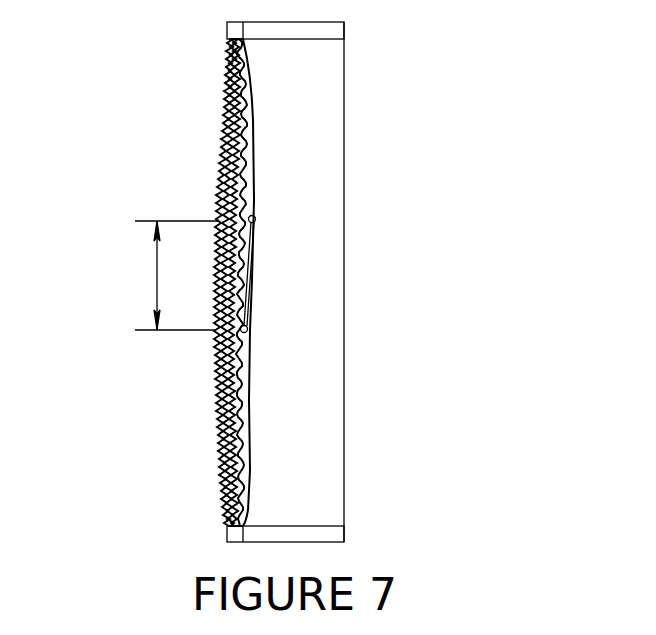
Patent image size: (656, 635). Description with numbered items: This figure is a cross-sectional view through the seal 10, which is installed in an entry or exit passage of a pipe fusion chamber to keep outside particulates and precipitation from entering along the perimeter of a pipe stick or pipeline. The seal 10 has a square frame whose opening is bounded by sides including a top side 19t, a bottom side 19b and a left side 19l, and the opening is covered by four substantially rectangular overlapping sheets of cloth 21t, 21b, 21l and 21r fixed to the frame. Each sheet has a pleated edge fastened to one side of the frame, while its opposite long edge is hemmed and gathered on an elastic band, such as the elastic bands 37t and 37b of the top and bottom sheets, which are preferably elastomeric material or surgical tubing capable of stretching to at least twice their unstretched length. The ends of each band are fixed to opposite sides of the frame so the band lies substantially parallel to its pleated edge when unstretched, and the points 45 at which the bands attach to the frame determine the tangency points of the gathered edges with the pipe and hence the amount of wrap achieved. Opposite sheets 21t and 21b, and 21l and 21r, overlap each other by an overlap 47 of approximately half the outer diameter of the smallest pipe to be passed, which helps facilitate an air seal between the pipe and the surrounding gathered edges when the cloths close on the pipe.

The seal 10 is at (514, 157).
The top side of frame 19t is at (303, 32).
The bottom side of frame 19b is at (322, 535).
The left side of frame 19l is at (323, 457).
The top sheet of cloth 21t is at (255, 120).
The bottom sheet of cloth 21b is at (252, 366).
The left sheet of cloth 21l is at (222, 368).
The right sheet of cloth 21r is at (222, 455).
The elastic band of bottom sheet 37b is at (255, 218).
The elastic band of top sheet 37t is at (247, 328).
The attachment points of elastic bands 45 is at (242, 36).
The overlap of opposite sheets 47 is at (155, 272).